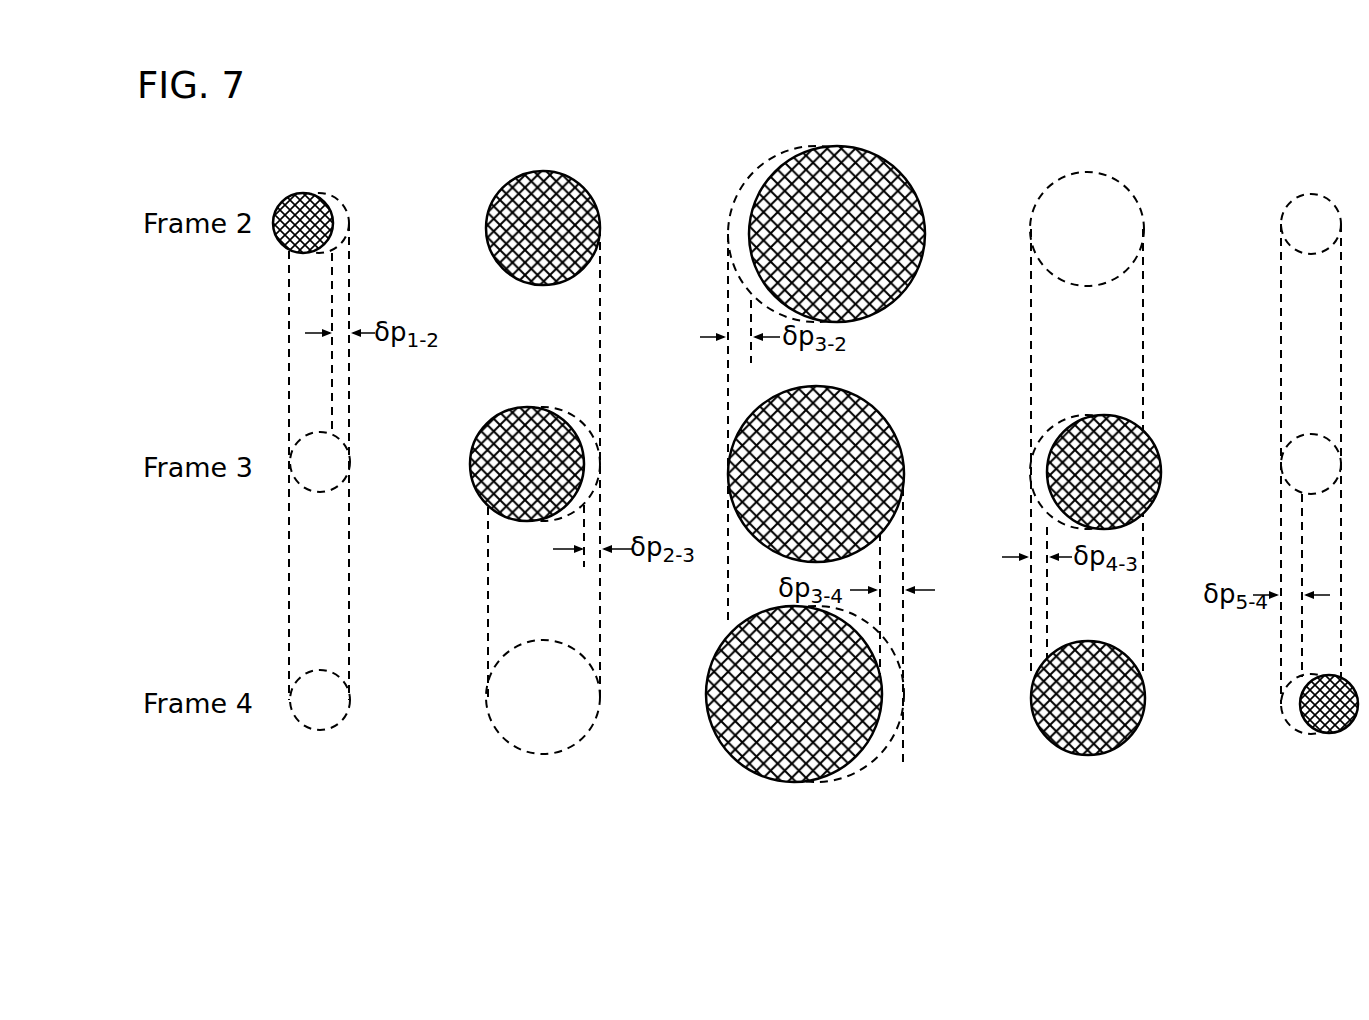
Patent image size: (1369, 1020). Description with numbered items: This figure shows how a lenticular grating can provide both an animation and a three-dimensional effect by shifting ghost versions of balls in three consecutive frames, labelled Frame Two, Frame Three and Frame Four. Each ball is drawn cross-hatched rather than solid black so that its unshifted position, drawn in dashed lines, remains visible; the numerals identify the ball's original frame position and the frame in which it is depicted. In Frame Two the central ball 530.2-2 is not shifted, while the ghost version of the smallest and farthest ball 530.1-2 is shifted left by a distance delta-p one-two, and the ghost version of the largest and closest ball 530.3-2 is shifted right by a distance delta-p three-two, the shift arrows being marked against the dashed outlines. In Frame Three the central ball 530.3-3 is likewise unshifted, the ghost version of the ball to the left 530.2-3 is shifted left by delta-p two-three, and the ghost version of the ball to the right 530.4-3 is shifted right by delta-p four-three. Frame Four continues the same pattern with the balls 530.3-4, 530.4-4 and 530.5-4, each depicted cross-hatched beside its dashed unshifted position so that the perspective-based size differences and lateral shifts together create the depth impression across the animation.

The ghost version of the smallest ball in Frame 2 530.1-2 is at (284, 195).
The central ball in Frame 2 530.2-2 is at (586, 161).
The ghost version of the ball to the left in Frame 3 530.2-3 is at (519, 405).
The ghost version of the largest ball in Frame 2 530.3-2 is at (905, 138).
The central ball in Frame 3 530.3-3 is at (873, 404).
The ball from Frame 3 position depicted in Frame 4 530.3-4 is at (748, 776).
The ghost version of the ball to the right in Frame 3 530.4-3 is at (1113, 390).
The ball from Frame 4 position depicted in Frame 4 530.4-4 is at (1118, 752).
The ball from Frame 5 position depicted in Frame 4 530.5-4 is at (1335, 733).